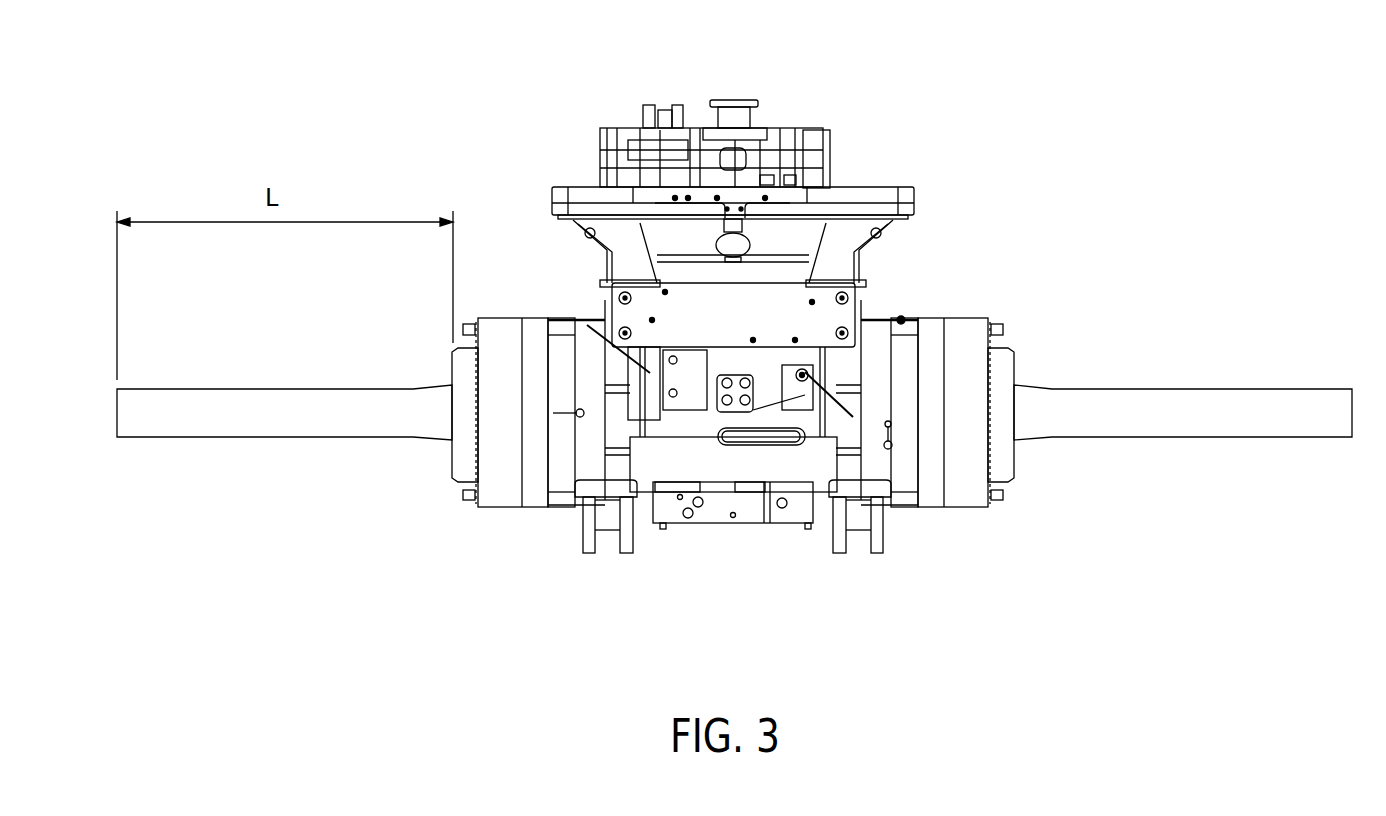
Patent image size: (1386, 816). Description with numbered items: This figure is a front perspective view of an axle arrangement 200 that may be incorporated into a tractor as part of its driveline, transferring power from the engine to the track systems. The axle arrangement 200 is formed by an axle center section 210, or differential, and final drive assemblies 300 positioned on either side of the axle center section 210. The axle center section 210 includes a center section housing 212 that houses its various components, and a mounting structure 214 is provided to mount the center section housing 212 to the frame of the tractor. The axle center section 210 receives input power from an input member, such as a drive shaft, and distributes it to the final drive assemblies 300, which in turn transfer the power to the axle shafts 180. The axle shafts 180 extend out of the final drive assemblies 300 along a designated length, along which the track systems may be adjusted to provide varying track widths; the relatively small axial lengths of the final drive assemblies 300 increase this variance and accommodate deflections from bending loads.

The axle arrangement 200 is at (410, 124).
The mounting structure 214 is at (552, 200).
The axle center section 210 is at (672, 545).
The center section housing 212 is at (772, 508).
The final drive assembly 300 is at (515, 532).
The axle shaft 180 is at (245, 437).